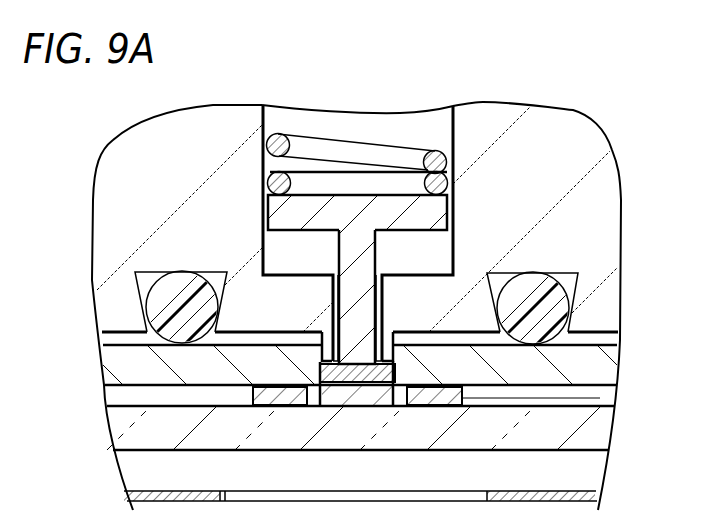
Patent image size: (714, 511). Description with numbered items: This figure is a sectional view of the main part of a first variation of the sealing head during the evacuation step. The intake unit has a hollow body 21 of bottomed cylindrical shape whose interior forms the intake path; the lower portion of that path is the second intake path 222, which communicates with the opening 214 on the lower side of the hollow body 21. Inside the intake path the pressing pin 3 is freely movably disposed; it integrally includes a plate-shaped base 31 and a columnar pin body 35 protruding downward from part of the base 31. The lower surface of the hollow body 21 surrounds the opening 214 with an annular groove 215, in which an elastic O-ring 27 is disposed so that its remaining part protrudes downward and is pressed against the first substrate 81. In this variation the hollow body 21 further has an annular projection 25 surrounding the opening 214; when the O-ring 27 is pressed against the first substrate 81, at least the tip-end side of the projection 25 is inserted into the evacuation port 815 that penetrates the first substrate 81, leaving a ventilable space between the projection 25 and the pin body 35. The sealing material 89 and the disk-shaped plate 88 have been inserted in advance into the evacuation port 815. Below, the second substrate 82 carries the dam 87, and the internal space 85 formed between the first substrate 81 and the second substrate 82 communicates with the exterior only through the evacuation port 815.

The hollow body 21 is at (613, 162).
The groove 215 is at (502, 272).
The O-ring 27 is at (569, 288).
The pressing pin 3 is at (341, 275).
The base 31 is at (272, 208).
The pin body 35 is at (350, 257).
The second intake path 222 is at (331, 300).
The projection 25 is at (384, 343).
The evacuation port 815 is at (316, 360).
The first substrate 81 is at (105, 357).
The plate 88 is at (386, 383).
The sealing material 89 is at (357, 419).
The opening 214 is at (280, 418).
The dam 87 is at (418, 406).
The internal space 85 is at (480, 398).
The second substrate 82 is at (108, 425).